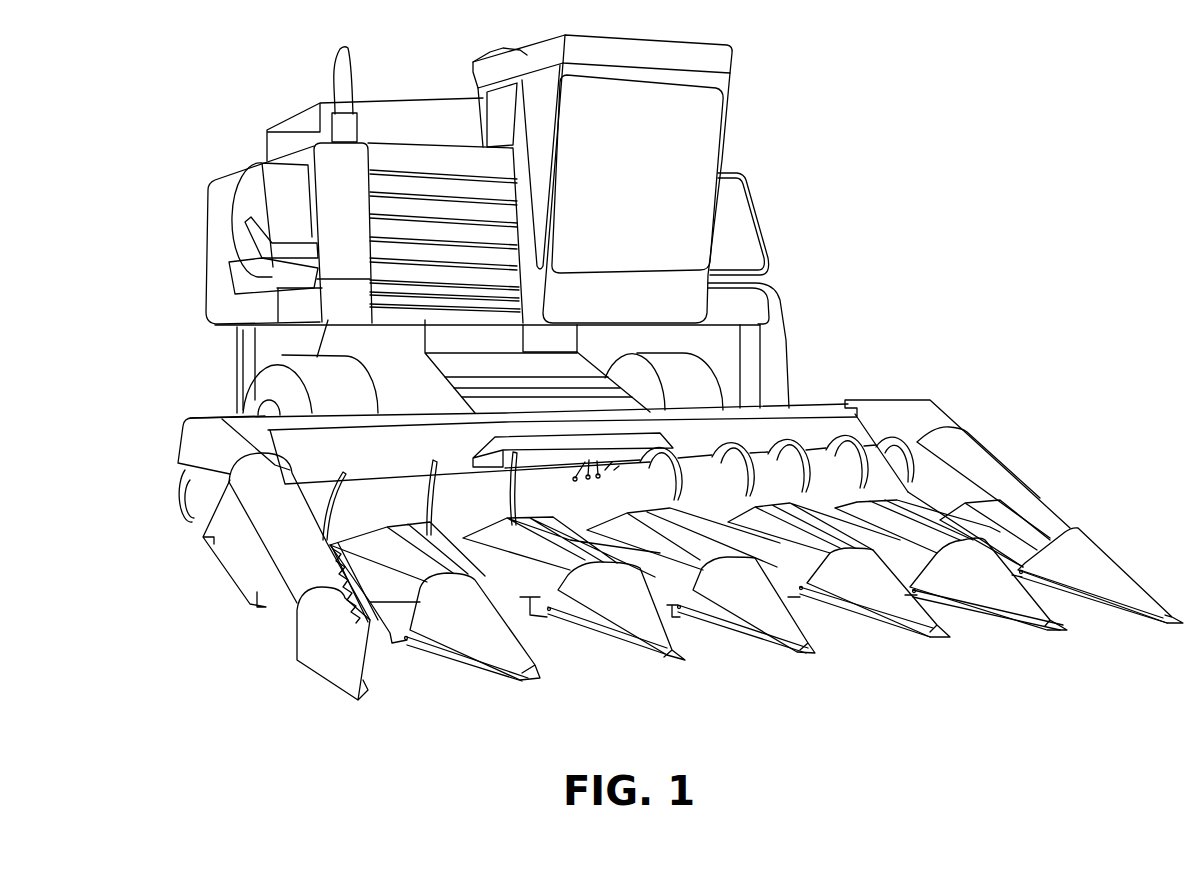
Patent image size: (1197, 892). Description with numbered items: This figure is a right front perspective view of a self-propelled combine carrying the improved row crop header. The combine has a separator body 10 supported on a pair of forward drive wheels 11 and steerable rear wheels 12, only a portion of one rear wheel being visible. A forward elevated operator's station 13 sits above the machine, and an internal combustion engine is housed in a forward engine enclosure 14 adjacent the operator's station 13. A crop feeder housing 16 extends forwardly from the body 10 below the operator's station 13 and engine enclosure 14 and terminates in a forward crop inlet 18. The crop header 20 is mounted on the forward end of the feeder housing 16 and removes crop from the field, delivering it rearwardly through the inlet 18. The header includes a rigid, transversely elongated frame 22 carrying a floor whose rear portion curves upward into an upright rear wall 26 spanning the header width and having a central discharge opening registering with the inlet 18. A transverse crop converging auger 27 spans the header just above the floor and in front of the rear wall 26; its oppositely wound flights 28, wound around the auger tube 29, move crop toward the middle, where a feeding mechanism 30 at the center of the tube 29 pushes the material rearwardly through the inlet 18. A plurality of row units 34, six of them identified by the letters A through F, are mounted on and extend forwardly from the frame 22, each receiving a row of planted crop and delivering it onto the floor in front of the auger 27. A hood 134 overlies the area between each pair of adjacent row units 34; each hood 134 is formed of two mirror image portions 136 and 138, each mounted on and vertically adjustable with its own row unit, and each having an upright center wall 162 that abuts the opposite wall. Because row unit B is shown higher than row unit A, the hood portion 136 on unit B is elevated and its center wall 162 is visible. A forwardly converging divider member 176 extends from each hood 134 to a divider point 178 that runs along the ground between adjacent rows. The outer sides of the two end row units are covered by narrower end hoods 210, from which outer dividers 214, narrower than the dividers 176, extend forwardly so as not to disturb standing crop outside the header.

The separator body 10 is at (232, 358).
The forward drive wheels 11 is at (350, 365).
The steerable rear wheels 12 is at (190, 520).
The operator's station 13 is at (733, 119).
The engine enclosure 14 is at (413, 148).
The crop feeder housing 16 is at (430, 392).
The forward crop inlet 18 is at (495, 445).
The crop header 20 is at (246, 607).
The header frame 22 is at (813, 402).
The rear wall 26 is at (714, 442).
The crop converging auger 27 is at (397, 476).
The flights 28 is at (427, 517).
The auger tube 29 is at (520, 459).
The feeding mechanism 30 is at (622, 465).
The row units 34 is at (405, 650).
The hood 134 is at (367, 531).
The hood portion 136 is at (460, 568).
The hood portion 138 is at (403, 607).
The center wall 162 is at (392, 550).
The divider member 176 is at (620, 637).
The divider point 178 is at (680, 663).
The end hoods 210 is at (237, 552).
The outer dividers 214 is at (348, 680).